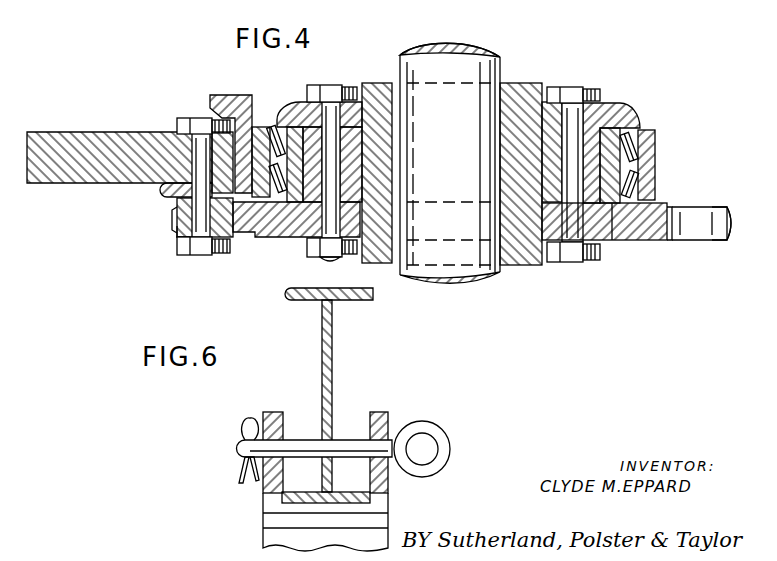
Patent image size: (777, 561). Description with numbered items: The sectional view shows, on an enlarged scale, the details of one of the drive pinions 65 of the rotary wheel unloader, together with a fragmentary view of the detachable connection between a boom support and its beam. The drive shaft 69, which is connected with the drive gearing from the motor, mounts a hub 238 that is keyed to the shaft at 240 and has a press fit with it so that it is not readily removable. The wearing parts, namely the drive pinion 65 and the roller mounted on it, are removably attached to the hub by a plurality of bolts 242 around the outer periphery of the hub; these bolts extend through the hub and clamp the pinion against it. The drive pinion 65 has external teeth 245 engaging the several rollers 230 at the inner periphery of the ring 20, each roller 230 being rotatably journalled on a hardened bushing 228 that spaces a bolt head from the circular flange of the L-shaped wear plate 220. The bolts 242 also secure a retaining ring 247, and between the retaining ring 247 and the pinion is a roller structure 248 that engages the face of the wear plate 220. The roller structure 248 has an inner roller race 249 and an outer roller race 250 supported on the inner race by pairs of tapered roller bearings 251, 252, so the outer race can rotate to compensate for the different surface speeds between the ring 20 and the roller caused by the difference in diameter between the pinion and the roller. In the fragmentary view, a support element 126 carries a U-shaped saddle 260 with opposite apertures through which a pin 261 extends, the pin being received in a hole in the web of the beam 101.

In FIG. 4, the ring 20 is at (160, 187).
In FIG. 4, the wear plate 220 is at (254, 94).
In FIG. 4, the hardened bushing 228 is at (180, 233).
In FIG. 4, the roller 230 is at (177, 217).
In FIG. 4, the hub 238 is at (523, 268).
In FIG. 4, the key 240 is at (397, 171).
In FIG. 4, the bolts 242 is at (355, 84).
In FIG. 4, the external teeth 245 is at (707, 213).
In FIG. 4, the retaining ring 247 is at (640, 120).
In FIG. 4, the roller structure 248 is at (262, 126).
In FIG. 4, the inner roller race 249 is at (613, 203).
In FIG. 4, the outer roller race 250 is at (657, 163).
In FIG. 4, the tapered roller bearing 251 is at (280, 207).
In FIG. 4, the tapered roller bearing 252 is at (286, 142).
In FIG. 4, the drive pinion 65 is at (637, 247).
In FIG. 4, the drive shaft 69 is at (497, 57).
In FIG. 6, the beam 101 is at (331, 360).
In FIG. 6, the support element 126 is at (263, 528).
In FIG. 6, the U-shaped saddle 260 is at (388, 412).
In FIG. 6, the pin 261 is at (237, 449).